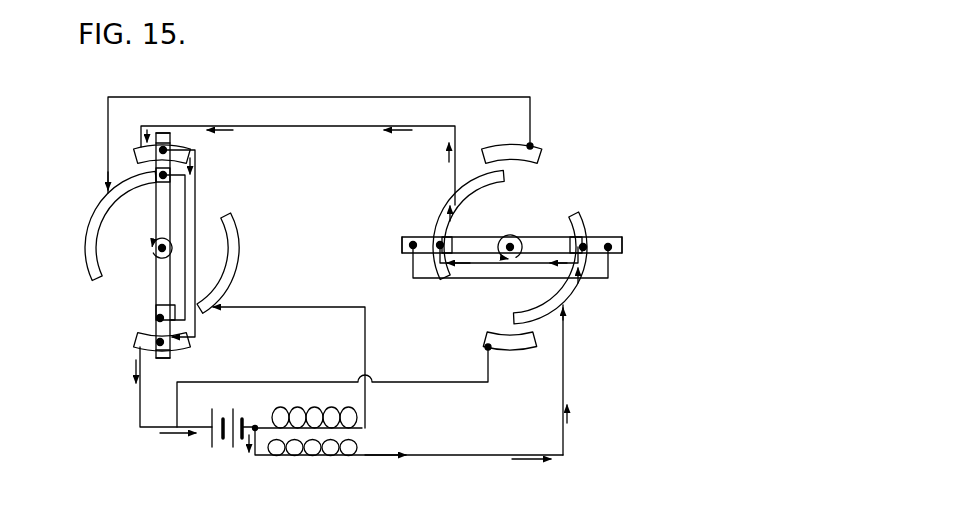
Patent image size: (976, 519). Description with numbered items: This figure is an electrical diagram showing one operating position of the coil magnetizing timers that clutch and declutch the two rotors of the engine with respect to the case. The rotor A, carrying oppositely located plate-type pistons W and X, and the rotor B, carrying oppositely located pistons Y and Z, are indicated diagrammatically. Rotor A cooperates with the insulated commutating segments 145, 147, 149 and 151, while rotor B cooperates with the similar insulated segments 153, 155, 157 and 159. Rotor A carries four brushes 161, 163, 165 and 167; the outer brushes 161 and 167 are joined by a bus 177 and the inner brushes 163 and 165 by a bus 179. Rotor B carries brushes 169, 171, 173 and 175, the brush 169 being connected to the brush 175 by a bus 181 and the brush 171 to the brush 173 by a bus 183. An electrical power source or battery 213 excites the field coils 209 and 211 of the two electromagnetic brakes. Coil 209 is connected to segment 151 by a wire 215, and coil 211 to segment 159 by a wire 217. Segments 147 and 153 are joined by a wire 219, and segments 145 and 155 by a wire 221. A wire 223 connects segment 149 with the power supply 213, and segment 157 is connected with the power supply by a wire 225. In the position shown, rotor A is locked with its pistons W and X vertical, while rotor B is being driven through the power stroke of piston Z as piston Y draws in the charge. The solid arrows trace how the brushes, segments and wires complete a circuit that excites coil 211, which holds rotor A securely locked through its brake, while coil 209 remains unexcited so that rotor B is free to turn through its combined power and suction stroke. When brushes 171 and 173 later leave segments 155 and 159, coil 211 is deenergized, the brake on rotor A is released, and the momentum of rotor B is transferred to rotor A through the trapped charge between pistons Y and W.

The insulated commutating segment 145 is at (140, 152).
The insulated commutating segment 147 is at (100, 206).
The insulated commutating segment 149 is at (136, 340).
The insulated commutating segment 151 is at (242, 251).
The insulated segment 153 is at (503, 146).
The insulated segment 155 is at (452, 198).
The insulated segment 157 is at (488, 334).
The insulated segment 159 is at (580, 217).
The brush 161 is at (167, 150).
The brush 163 is at (160, 178).
The brush 165 is at (158, 318).
The brush 167 is at (157, 358).
The brush 169 is at (413, 236).
The brush 171 is at (449, 237).
The brush 173 is at (577, 242).
The brush 175 is at (612, 240).
The bus 177 is at (196, 188).
The bus 179 is at (188, 234).
The bus 181 is at (470, 279).
The bus 183 is at (499, 278).
The field coil 209 is at (331, 404).
The field coil 211 is at (283, 463).
The electrical power source 213 is at (219, 455).
The wire 215 is at (290, 307).
The wire 217 is at (495, 453).
The wire 219 is at (335, 97).
The wire 221 is at (308, 130).
The wire 223 is at (140, 412).
The wire 225 is at (450, 383).
The rotor A is at (160, 220).
The rotor B is at (499, 237).
The piston W is at (168, 133).
The piston X is at (172, 354).
The piston Y is at (622, 252).
The piston Z is at (402, 243).